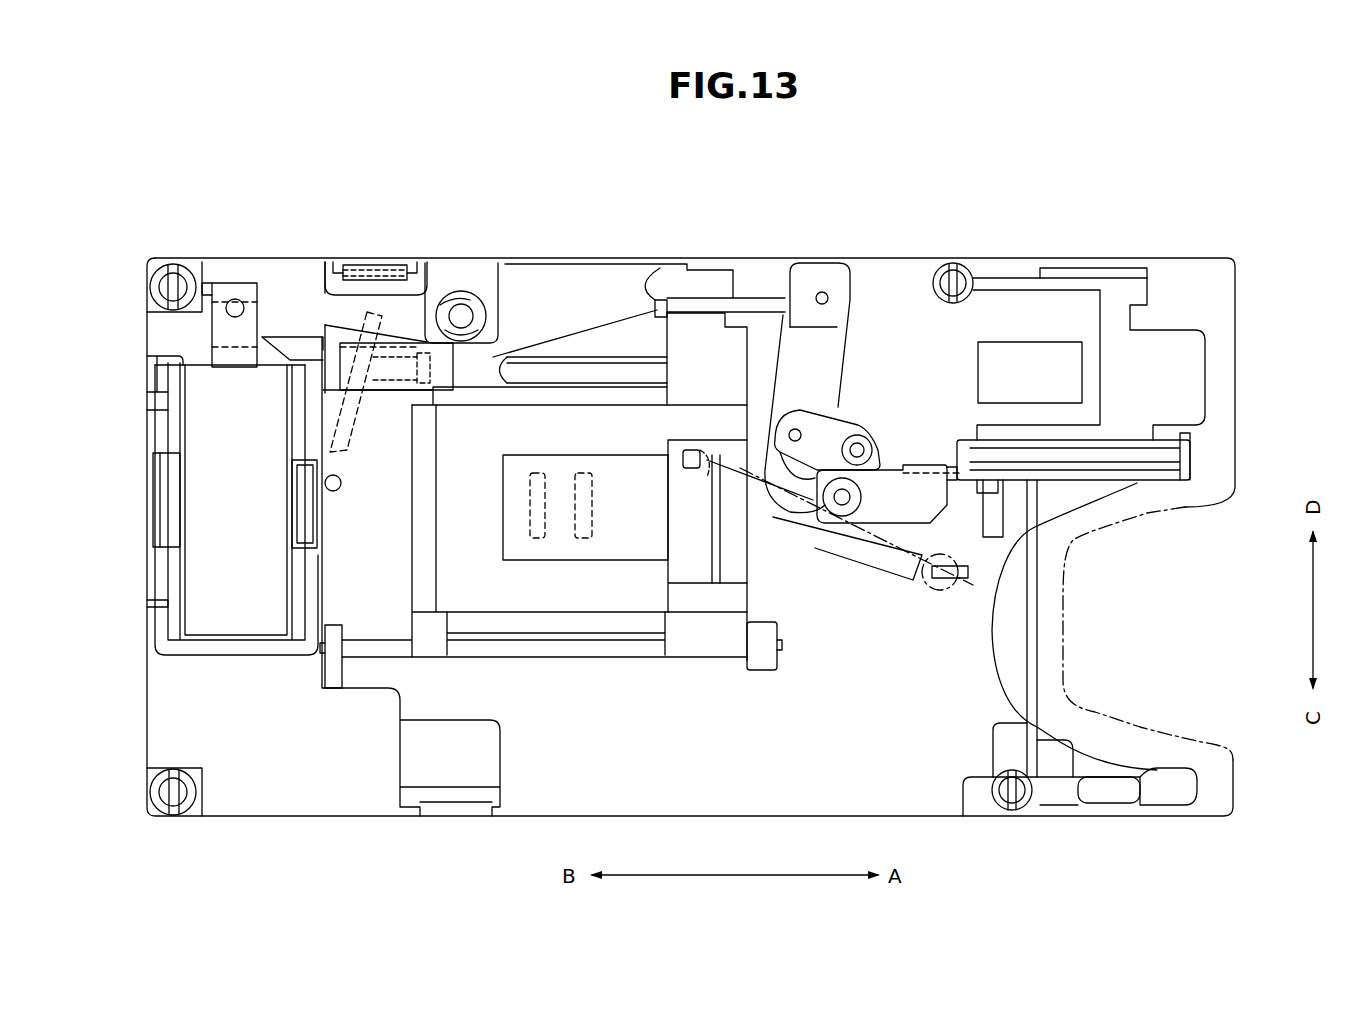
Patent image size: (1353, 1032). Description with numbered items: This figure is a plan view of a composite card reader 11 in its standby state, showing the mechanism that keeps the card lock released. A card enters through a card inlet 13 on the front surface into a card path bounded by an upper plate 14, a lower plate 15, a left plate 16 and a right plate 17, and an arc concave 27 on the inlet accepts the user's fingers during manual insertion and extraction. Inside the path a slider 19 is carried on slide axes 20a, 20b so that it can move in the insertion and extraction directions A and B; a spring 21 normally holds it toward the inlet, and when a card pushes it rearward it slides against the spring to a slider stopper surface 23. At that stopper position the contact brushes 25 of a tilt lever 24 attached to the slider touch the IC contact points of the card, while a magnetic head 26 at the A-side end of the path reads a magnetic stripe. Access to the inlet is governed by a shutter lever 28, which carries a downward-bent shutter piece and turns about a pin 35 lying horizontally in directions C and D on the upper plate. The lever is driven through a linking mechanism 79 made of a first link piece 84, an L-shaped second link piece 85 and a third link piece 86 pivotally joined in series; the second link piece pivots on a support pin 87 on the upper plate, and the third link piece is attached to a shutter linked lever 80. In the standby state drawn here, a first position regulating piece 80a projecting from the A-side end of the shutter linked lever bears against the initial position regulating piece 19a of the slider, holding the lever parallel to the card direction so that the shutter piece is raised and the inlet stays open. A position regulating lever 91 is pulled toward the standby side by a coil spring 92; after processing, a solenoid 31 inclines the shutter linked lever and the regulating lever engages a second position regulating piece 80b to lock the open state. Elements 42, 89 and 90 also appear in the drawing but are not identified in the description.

The composite card reader 11 is at (950, 180).
The card inlet 13 is at (1160, 677).
The upper plate 14 is at (1083, 293).
The lower plate 15 is at (1173, 327).
The left plate 16 is at (1082, 795).
The right plate 17 is at (1043, 275).
The slider 19 is at (676, 573).
The initial position regulating piece 19a is at (657, 300).
The slide axis 20a is at (630, 662).
The slide axis 20b is at (623, 367).
The spring 21 is at (883, 570).
The slider stopper surface 23 is at (347, 670).
The tilt lever 24 is at (628, 538).
The contact brushes 25 is at (580, 543).
The magnetic head 26 is at (995, 340).
The arc concave 27 is at (1195, 805).
The shutter lever 28 is at (1172, 458).
The solenoid 31 is at (200, 517).
The pin 35 is at (985, 528).
The bracket 42 is at (222, 262).
The linking mechanism 79 is at (914, 411).
The shutter linked lever 80 is at (573, 262).
The first position regulating piece 80a is at (708, 270).
The second position regulating piece 80b is at (262, 330).
The first link piece 84 is at (920, 465).
The second link piece 85 is at (832, 430).
The third link piece 86 is at (823, 363).
The support pin 87 is at (873, 453).
The screw housing 89 is at (455, 262).
The pin 90 is at (340, 472).
The position regulating lever 91 is at (373, 260).
The coil spring 92 is at (413, 260).